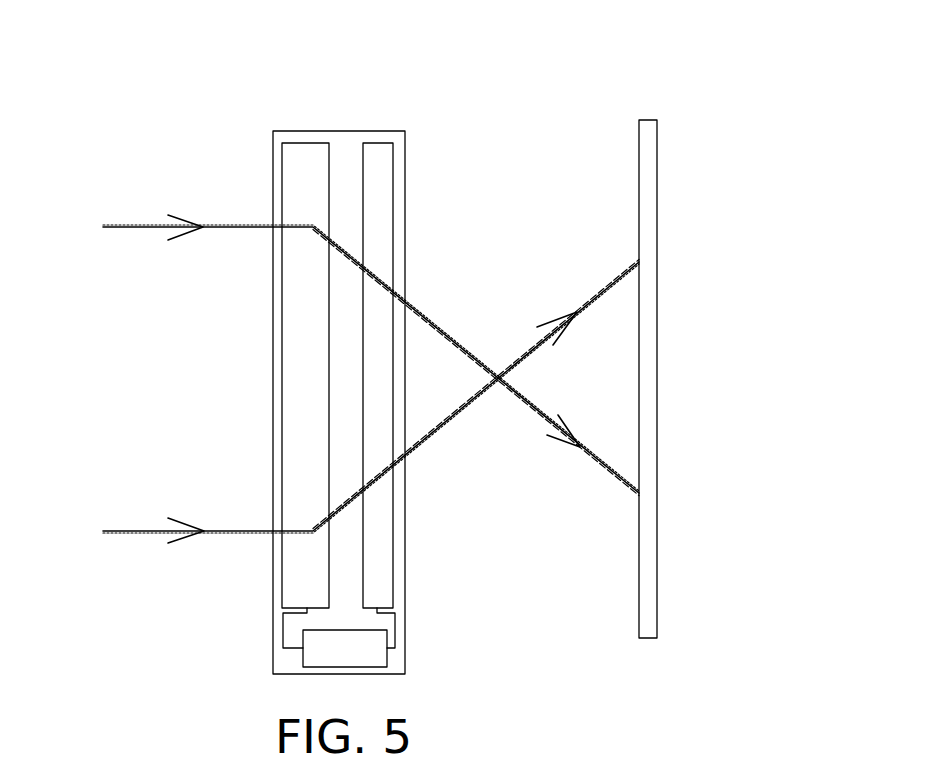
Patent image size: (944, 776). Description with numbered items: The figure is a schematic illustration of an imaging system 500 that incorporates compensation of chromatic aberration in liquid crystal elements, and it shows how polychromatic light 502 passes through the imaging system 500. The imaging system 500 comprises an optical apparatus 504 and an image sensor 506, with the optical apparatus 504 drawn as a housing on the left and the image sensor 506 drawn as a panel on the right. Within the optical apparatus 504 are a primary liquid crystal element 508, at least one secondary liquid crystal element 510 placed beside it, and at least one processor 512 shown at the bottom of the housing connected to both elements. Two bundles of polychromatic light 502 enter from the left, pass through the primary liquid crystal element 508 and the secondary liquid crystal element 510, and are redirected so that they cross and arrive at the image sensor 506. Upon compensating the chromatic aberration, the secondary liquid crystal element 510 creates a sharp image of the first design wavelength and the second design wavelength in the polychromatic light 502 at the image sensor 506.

The imaging system 500 is at (642, 52).
The polychromatic light 502 is at (105, 195).
The optical apparatus 504 is at (339, 368).
The image sensor 506 is at (695, 369).
The primary liquid crystal element 508 is at (288, 343).
The secondary liquid crystal element 510 is at (398, 343).
The processor 512 is at (345, 648).